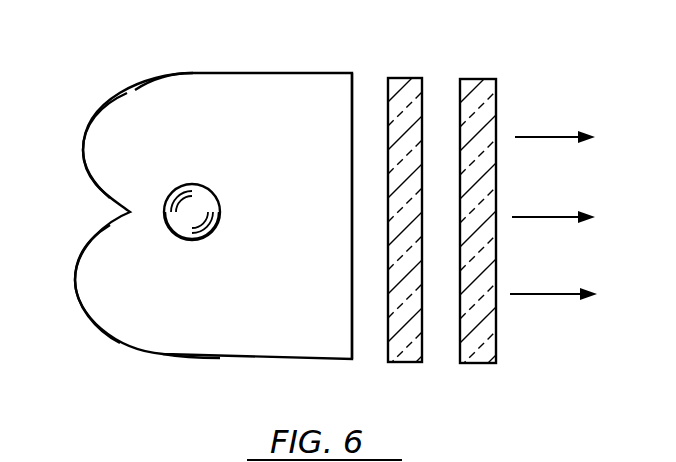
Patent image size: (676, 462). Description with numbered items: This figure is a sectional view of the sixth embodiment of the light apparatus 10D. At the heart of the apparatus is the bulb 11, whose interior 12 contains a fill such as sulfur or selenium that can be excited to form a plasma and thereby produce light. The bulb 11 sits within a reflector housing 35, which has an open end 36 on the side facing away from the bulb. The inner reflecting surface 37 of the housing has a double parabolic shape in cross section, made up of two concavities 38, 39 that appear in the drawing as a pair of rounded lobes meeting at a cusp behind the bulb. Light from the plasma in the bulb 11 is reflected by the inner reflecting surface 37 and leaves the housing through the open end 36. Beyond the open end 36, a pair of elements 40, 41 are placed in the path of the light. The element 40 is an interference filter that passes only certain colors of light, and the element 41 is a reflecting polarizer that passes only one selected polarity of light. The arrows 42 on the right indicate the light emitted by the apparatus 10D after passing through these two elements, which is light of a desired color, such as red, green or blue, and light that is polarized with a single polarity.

The light apparatus 10D is at (245, 54).
The reflector housing 35 is at (125, 92).
The open end 36 is at (340, 94).
The inner reflecting surface 37 is at (190, 82).
The concavity 38 is at (96, 142).
The concavity 39 is at (92, 272).
The interior 12 is at (202, 198).
The bulb 11 is at (218, 220).
The interference filter 40 is at (400, 363).
The reflecting polarizer 41 is at (478, 364).
The arrows 42 is at (545, 137).